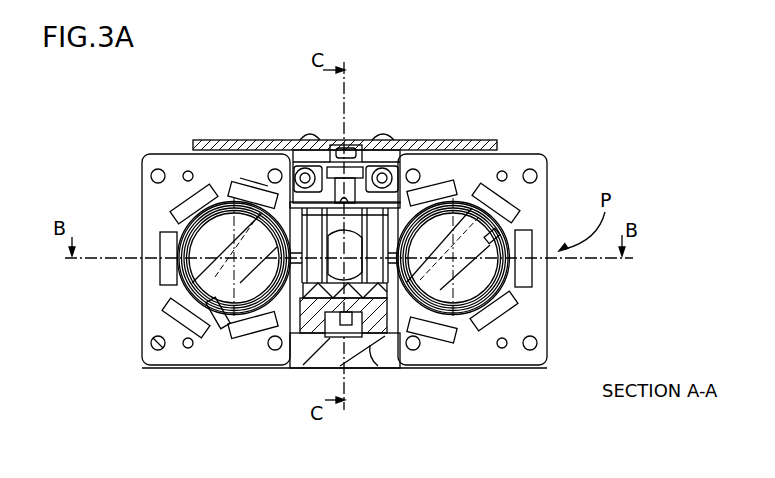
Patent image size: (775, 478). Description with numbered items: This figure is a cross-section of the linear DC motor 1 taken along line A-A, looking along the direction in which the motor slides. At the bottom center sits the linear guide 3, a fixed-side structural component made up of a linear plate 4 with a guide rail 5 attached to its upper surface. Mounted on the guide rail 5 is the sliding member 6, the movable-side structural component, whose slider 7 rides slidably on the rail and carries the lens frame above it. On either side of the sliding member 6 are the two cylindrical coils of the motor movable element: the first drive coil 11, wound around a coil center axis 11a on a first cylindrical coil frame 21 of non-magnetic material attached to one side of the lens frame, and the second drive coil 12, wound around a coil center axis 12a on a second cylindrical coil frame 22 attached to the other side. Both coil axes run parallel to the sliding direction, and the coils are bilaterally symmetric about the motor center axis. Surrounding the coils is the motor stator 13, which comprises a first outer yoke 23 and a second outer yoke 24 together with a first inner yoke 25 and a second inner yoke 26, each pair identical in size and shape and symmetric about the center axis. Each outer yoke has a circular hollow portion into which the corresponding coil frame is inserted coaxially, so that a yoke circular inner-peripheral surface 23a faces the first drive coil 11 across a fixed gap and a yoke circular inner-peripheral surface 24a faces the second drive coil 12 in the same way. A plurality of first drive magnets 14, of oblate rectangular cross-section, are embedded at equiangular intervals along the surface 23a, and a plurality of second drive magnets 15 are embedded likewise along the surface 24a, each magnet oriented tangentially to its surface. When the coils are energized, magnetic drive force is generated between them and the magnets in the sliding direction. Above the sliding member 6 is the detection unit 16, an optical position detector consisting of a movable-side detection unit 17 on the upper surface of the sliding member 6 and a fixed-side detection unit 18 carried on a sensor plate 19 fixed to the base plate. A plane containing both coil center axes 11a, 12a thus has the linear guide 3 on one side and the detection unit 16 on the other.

The linear DC motor 1 is at (603, 106).
The linear guide 3 is at (313, 360).
The linear plate 4 is at (370, 350).
The guide rail 5 is at (346, 338).
The sliding member 6 is at (309, 278).
The slider 7 is at (395, 352).
The first drive coil 11 is at (170, 283).
The coil center axis 11a is at (253, 182).
The second drive coil 12 is at (514, 292).
The coil center axis 12a is at (446, 228).
The motor stator 13 is at (345, 75).
The first drive magnets 14 is at (225, 178).
The second drive magnets 15 is at (452, 190).
The detection unit 16 is at (422, 88).
The movable-side detection unit 17 is at (364, 178).
The fixed-side detection unit 18 is at (347, 147).
The sensor plate 19 is at (372, 165).
The first cylindrical coil frame 21 is at (180, 266).
The second cylindrical coil frame 22 is at (507, 275).
The first outer yoke 23 is at (136, 241).
The yoke circular inner-peripheral surface 23a is at (217, 320).
The second outer yoke 24 is at (552, 277).
The yoke circular inner-peripheral surface 24a is at (497, 232).
The first inner yoke 25 is at (216, 227).
The second inner yoke 26 is at (505, 349).